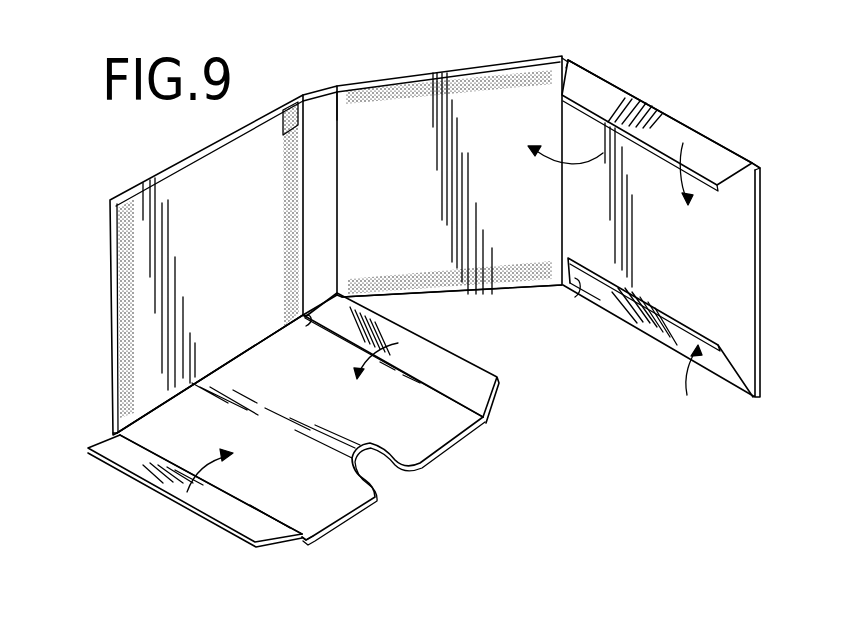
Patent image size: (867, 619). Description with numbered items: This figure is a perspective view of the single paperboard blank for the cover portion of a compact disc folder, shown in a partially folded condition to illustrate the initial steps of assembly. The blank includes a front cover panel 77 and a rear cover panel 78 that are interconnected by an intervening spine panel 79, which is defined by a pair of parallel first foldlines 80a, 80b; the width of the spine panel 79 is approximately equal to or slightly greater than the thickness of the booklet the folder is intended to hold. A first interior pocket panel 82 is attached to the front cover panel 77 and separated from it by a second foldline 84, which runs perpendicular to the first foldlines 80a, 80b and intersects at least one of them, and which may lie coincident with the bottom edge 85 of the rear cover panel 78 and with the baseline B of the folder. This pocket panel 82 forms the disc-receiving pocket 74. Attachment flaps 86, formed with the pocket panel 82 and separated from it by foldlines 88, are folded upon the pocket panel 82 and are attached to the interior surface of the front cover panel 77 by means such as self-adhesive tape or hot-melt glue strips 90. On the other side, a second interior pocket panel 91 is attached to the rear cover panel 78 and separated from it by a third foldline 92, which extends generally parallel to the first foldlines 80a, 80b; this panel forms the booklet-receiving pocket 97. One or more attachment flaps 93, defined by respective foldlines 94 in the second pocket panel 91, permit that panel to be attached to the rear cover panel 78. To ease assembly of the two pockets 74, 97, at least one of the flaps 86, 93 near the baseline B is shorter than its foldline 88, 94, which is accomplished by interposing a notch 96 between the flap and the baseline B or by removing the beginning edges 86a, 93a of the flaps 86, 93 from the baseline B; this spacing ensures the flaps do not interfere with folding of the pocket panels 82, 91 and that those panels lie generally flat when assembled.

The disc-receiving pocket 74 is at (237, 498).
The front cover panel 77 is at (214, 249).
The rear cover panel 78 is at (393, 195).
The spine panel 79 is at (304, 197).
The first foldline 80a is at (290, 140).
The first foldline 80b is at (337, 137).
The first interior pocket panel 82 is at (263, 429).
The second foldline 84 is at (229, 362).
The bottom edge 85 is at (493, 295).
The attachment flap 86 is at (148, 462).
The beginning edge 86a is at (88, 450).
The foldline 88 is at (160, 456).
The glue strip 90 is at (117, 296).
The second interior pocket panel 91 is at (623, 238).
The third foldline 92 is at (562, 195).
The attachment flap 93 is at (657, 137).
The beginning edge 93a is at (567, 80).
The foldline 94 is at (637, 332).
The notch 96 is at (563, 78).
The booklet-receiving pocket 97 is at (745, 163).
The baseline B is at (112, 431).